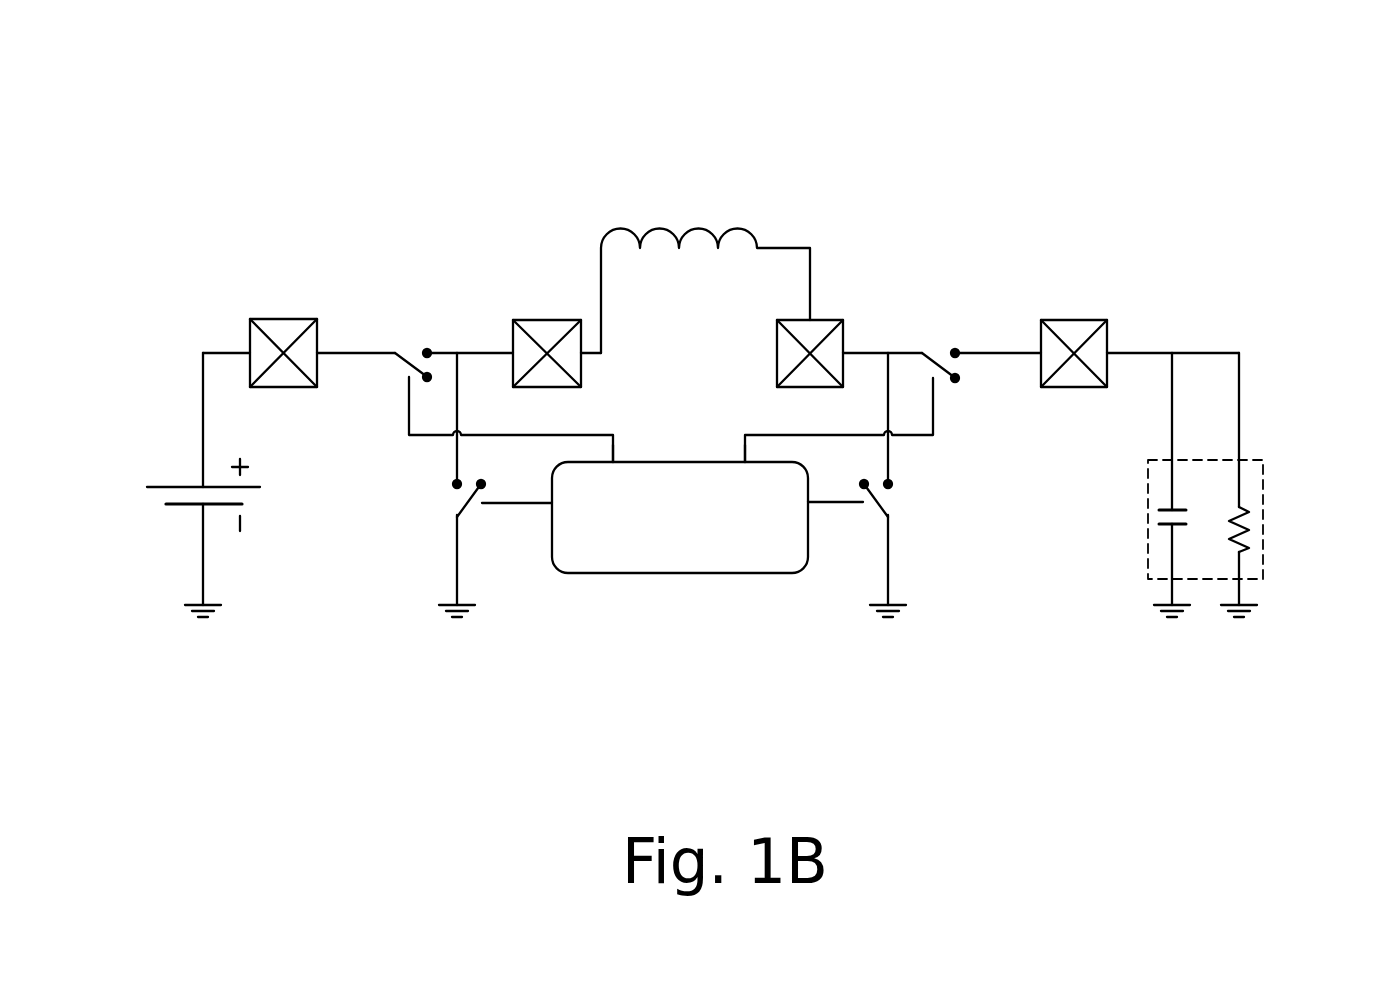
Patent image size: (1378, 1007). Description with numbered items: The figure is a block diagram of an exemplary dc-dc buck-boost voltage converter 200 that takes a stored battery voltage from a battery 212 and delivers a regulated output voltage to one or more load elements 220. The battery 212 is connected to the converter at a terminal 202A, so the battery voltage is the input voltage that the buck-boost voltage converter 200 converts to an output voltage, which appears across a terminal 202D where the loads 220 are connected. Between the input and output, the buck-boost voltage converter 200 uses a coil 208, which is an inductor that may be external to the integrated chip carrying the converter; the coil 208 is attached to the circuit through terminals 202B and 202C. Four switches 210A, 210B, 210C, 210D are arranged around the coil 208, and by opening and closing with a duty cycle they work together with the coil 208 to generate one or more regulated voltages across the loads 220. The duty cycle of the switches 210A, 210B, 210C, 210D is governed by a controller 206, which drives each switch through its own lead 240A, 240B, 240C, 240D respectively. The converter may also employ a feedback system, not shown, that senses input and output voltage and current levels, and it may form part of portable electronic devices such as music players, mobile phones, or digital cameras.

The dc-dc buck-boost voltage converter 200 is at (662, 80).
The terminal 202A is at (247, 300).
The terminal 202B is at (583, 370).
The terminal 202C is at (847, 311).
The terminal 202D is at (1110, 312).
The controller 206 is at (680, 517).
The coil 208 is at (690, 225).
The switch 210A is at (408, 345).
The switch 210B is at (445, 500).
The switch 210C is at (897, 500).
The switch 210D is at (942, 380).
The battery 212 is at (149, 500).
The load elements 220 is at (1272, 508).
The lead 240A is at (618, 441).
The lead 240B is at (507, 508).
The lead 240C is at (836, 510).
The lead 240D is at (768, 432).